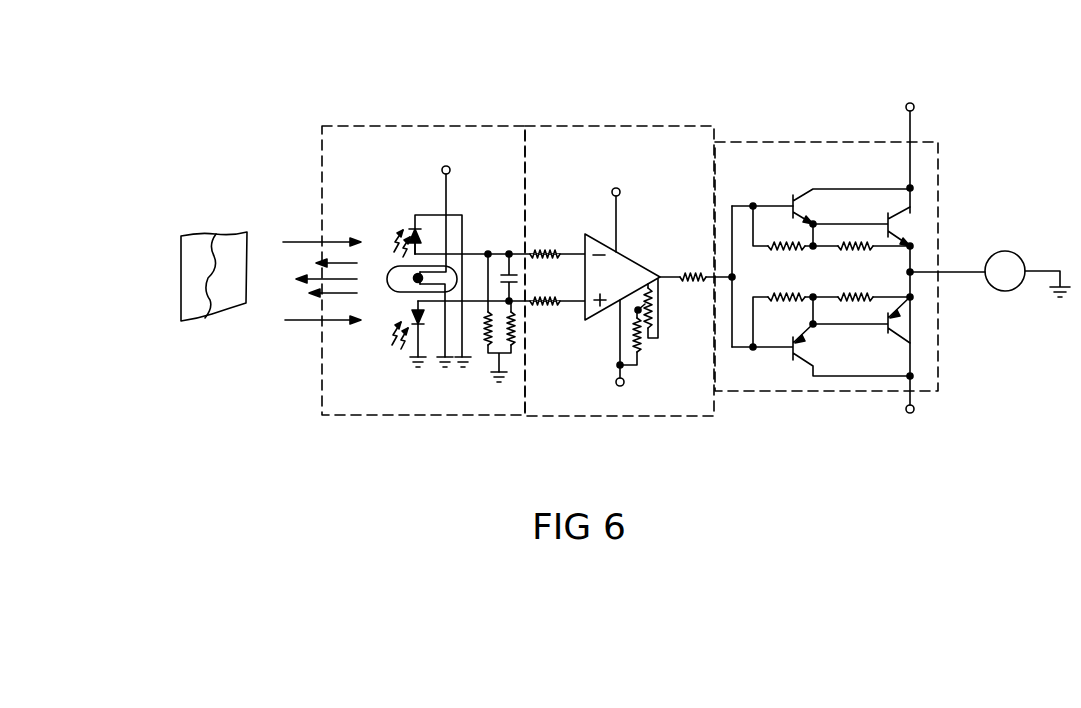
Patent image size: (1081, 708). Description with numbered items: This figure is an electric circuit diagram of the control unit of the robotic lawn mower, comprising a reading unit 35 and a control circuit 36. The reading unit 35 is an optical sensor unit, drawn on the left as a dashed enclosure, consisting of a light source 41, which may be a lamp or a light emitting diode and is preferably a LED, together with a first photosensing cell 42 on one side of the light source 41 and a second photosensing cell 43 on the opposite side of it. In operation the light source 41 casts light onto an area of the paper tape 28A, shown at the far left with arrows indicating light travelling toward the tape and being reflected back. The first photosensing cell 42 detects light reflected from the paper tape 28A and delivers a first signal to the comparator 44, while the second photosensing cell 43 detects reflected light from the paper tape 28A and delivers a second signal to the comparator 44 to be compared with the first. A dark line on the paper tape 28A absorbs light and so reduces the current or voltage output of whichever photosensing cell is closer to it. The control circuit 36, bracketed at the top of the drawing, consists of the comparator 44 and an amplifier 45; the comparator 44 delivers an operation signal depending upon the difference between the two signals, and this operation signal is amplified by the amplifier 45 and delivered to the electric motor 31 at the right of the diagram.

The paper tape 28A is at (185, 303).
The reading unit 35 is at (400, 133).
The control circuit 36 is at (830, 79).
The light source 41 is at (398, 285).
The first photosensing cell 42 is at (410, 326).
The second photosensing cell 43 is at (406, 220).
The comparator 44 is at (663, 136).
The amplifier 45 is at (820, 162).
The electric motor 31 is at (1010, 251).